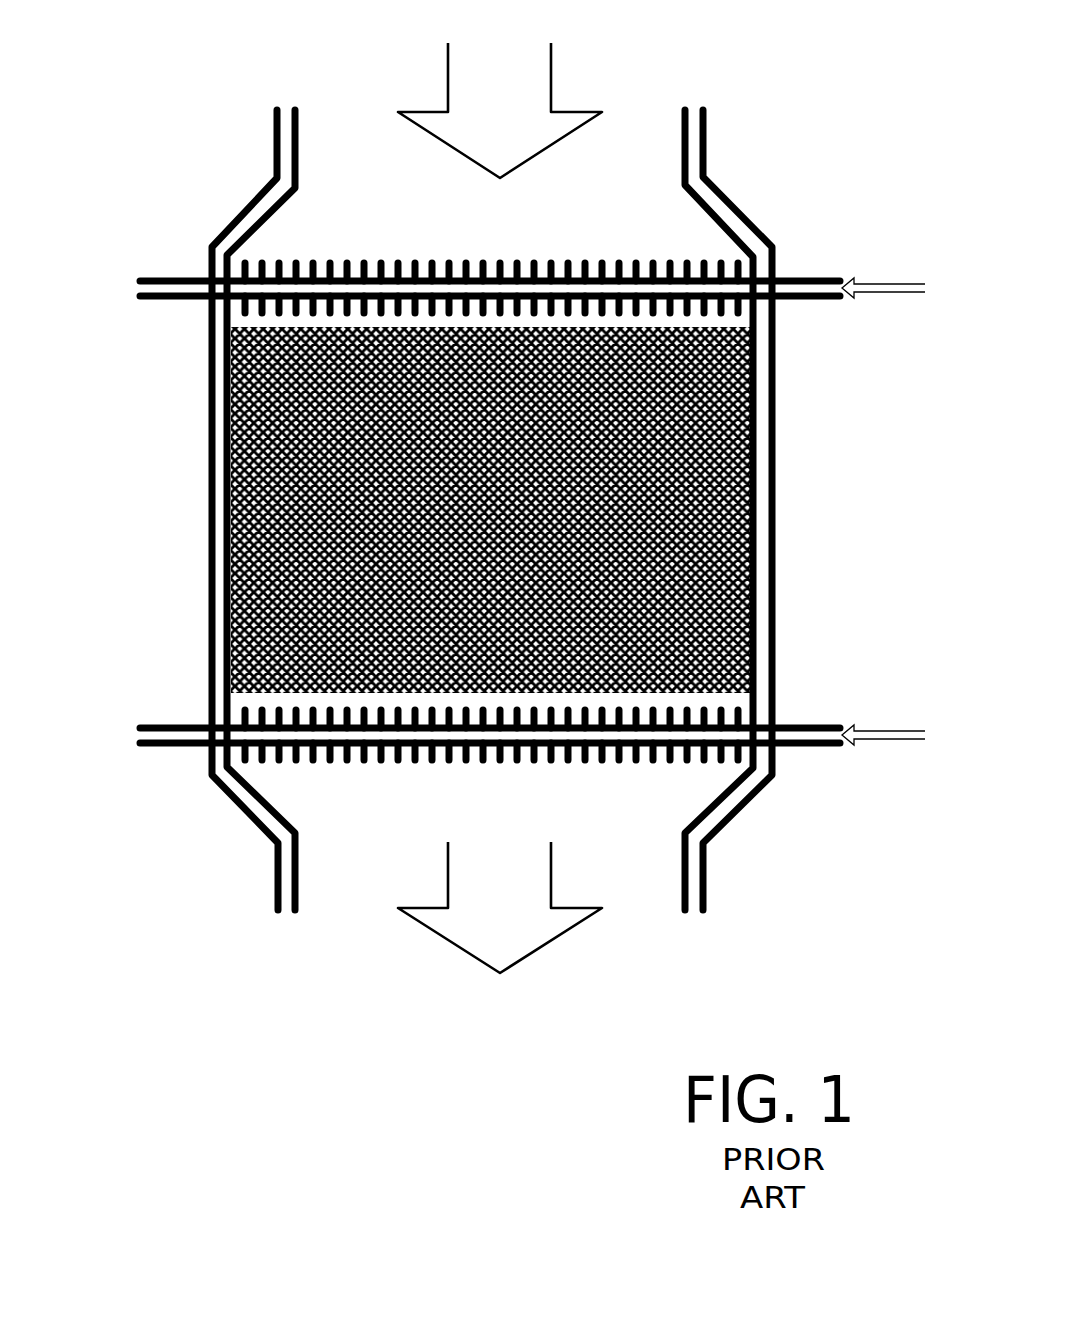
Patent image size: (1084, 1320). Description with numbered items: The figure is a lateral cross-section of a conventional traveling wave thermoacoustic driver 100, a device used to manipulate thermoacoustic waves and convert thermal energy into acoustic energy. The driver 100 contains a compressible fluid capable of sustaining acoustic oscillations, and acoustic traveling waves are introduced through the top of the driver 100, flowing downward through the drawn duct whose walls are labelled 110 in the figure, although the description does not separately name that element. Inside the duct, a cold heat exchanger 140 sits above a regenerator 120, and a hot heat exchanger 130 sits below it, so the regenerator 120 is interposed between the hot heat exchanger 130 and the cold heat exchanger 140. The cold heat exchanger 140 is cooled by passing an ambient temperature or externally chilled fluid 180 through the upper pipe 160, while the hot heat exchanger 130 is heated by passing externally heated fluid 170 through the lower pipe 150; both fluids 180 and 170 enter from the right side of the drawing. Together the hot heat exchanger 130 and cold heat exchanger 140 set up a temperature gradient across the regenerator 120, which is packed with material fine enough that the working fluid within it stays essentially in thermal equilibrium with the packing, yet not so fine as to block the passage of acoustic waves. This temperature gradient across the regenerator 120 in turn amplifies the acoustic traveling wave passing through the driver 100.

The traveling wave thermoacoustic driver 100 is at (495, 499).
The housing / air duct 110 is at (211, 478).
The regenerator 120 is at (272, 404).
The hot heat exchanger 130 is at (483, 765).
The cold heat exchanger 140 is at (483, 260).
The pipe 150 is at (178, 746).
The pipe 160 is at (178, 278).
The externally heated fluid 170 is at (888, 730).
The ambient temperature fluid 180 is at (873, 278).